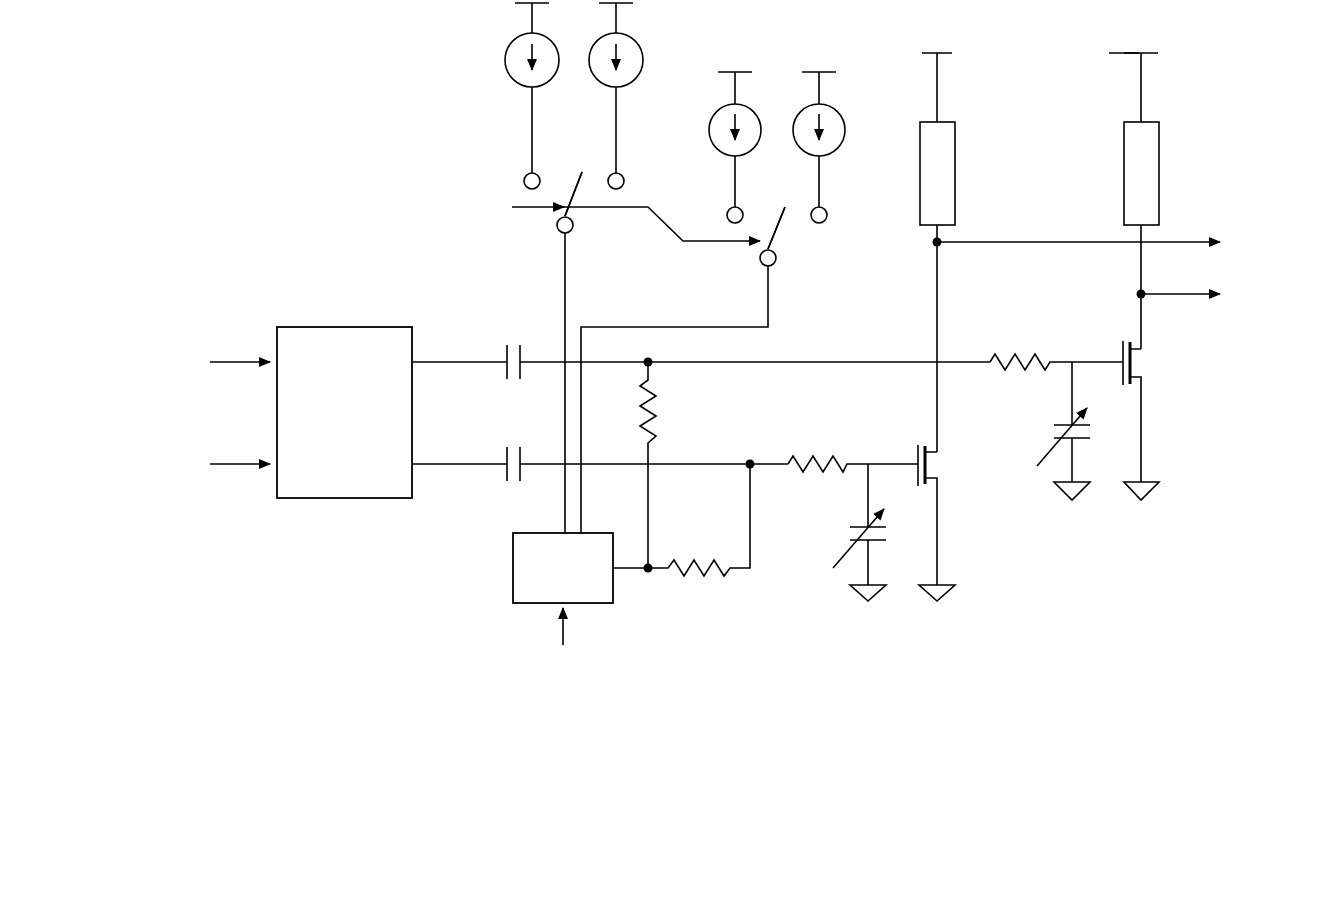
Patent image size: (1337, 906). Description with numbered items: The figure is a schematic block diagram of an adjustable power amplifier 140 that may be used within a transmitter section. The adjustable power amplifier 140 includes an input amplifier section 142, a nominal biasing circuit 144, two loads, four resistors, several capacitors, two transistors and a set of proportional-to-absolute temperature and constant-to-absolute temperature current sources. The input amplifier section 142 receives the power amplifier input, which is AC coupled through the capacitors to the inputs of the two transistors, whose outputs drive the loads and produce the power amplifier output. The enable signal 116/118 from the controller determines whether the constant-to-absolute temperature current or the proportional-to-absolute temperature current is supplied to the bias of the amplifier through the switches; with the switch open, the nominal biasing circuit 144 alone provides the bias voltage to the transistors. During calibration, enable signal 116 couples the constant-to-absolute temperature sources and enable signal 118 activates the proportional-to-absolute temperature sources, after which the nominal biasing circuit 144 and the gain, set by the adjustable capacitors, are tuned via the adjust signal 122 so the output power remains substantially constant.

The enable signal 116 is at (567, 352).
The enable signal 118 is at (675, 210).
The adjust signal 122 is at (810, 552).
The adjustable power amplifier 140 is at (719, 410).
The input amplifier section 142 is at (311, 412).
The nominal biasing circuit 144 is at (563, 568).